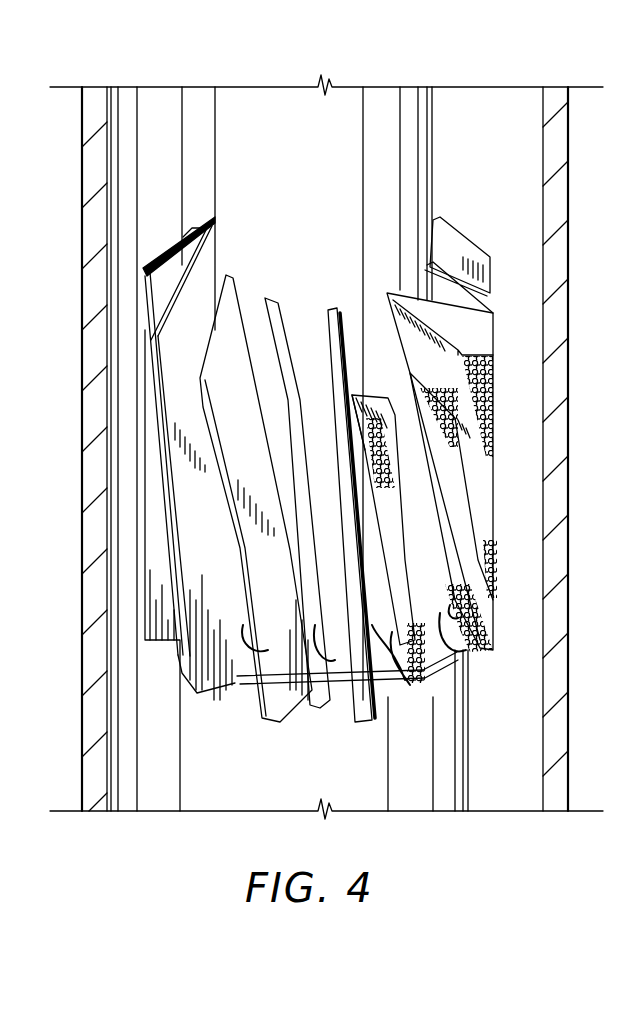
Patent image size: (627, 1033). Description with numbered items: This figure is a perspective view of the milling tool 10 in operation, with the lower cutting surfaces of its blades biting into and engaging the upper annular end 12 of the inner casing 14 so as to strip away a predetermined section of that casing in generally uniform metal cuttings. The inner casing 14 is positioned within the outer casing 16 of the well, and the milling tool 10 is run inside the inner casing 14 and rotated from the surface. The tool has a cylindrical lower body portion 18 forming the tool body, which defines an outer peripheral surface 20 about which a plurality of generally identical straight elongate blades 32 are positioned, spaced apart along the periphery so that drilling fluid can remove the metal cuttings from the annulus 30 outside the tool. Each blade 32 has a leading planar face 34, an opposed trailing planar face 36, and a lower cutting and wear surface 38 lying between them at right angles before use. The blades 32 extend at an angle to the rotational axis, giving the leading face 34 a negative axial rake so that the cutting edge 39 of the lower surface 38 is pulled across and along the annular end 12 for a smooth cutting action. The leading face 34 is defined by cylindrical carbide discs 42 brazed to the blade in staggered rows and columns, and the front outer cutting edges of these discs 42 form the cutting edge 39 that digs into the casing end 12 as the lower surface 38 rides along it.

The milling tool 10 is at (513, 177).
The annular end of inner casing 12 is at (318, 692).
The inner casing 14 is at (445, 781).
The outer casing 16 is at (560, 371).
The cylindrical lower body portion 18 is at (404, 157).
The outer peripheral surface 20 is at (435, 182).
The annulus 30 is at (524, 335).
The blades 32 is at (336, 320).
The leading planar face 34 is at (320, 572).
The trailing planar face 36 is at (452, 248).
The lower cutting and wear surface 38 is at (447, 697).
The cutting edge 39 is at (425, 690).
The cylindrical carbide discs 42 is at (497, 408).